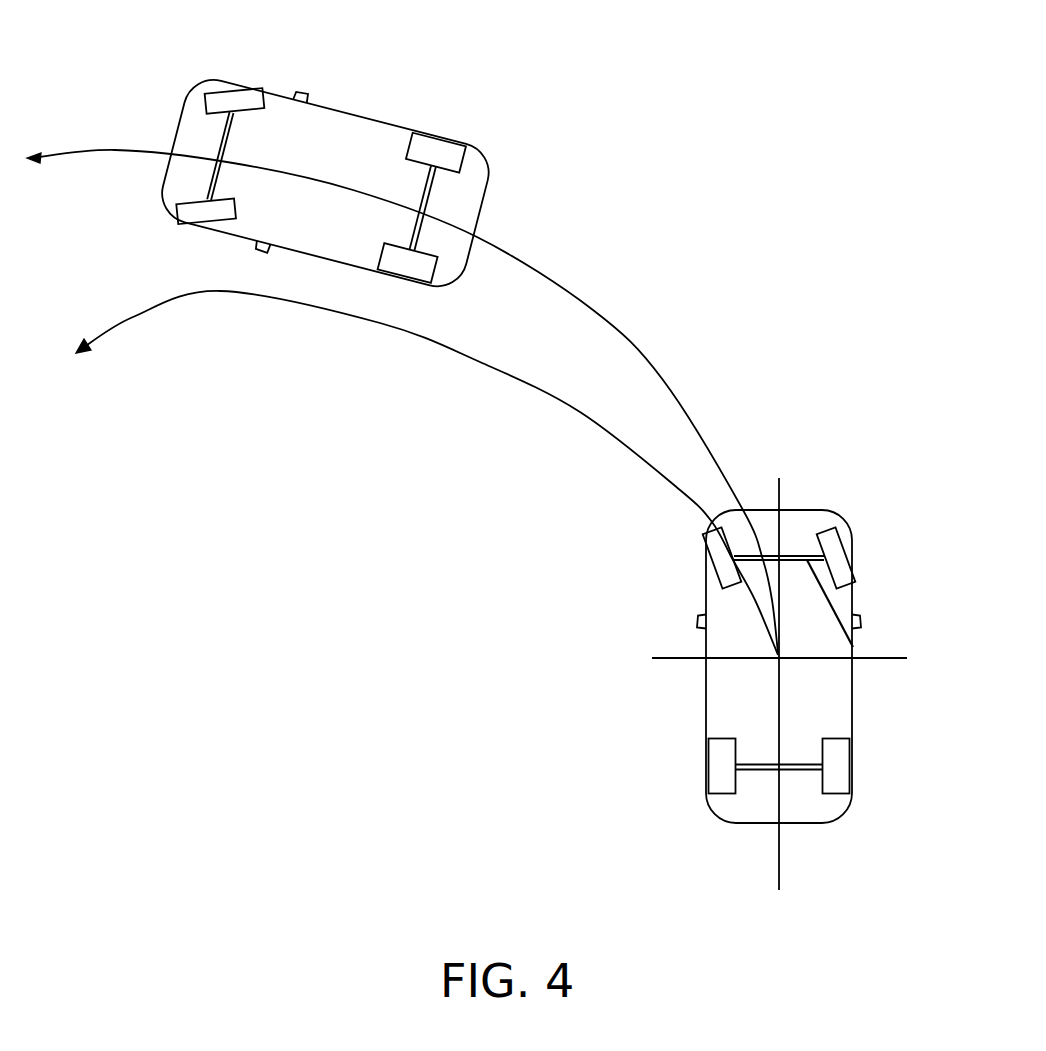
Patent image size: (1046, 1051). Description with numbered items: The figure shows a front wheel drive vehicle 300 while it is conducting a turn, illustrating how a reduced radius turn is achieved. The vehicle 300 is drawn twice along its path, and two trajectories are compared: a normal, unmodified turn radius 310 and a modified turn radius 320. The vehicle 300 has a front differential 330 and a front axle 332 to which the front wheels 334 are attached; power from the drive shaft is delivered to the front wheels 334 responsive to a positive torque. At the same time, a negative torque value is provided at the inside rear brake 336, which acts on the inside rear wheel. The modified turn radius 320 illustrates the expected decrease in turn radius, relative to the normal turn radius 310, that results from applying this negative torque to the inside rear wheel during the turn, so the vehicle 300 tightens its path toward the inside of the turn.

The front wheel drive vehicle 300 is at (370, 118).
The normal turn radius 310 is at (590, 312).
The modified turn radius 320 is at (173, 303).
The front differential 330 is at (218, 150).
The front axle 332 is at (853, 647).
The front wheels 334 is at (230, 95).
The inside rear brake 336 is at (423, 255).